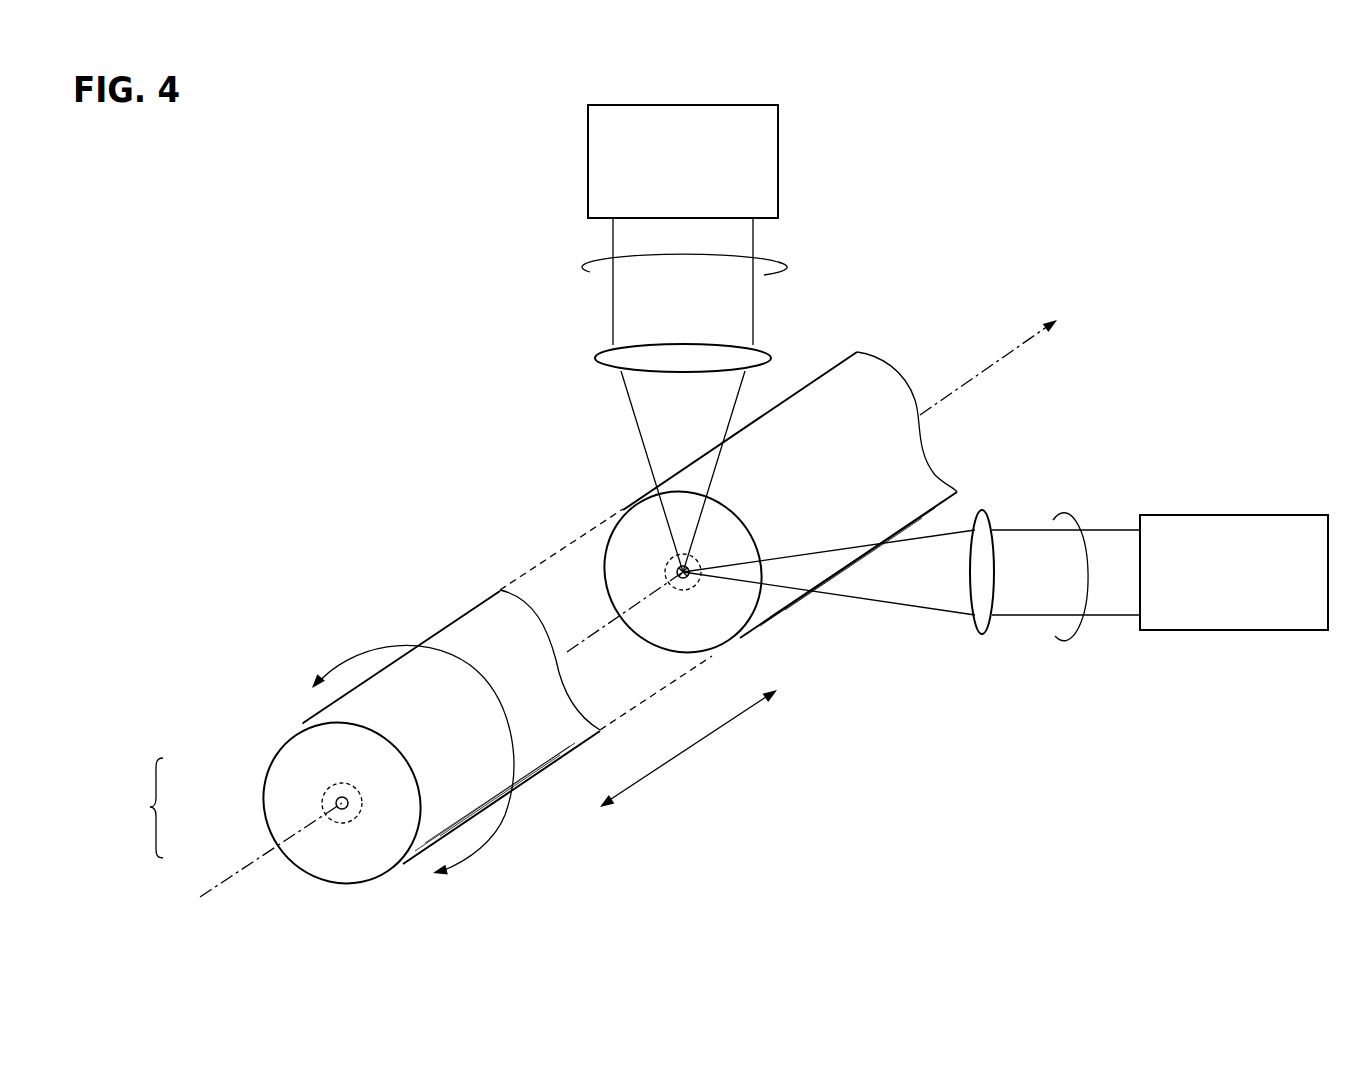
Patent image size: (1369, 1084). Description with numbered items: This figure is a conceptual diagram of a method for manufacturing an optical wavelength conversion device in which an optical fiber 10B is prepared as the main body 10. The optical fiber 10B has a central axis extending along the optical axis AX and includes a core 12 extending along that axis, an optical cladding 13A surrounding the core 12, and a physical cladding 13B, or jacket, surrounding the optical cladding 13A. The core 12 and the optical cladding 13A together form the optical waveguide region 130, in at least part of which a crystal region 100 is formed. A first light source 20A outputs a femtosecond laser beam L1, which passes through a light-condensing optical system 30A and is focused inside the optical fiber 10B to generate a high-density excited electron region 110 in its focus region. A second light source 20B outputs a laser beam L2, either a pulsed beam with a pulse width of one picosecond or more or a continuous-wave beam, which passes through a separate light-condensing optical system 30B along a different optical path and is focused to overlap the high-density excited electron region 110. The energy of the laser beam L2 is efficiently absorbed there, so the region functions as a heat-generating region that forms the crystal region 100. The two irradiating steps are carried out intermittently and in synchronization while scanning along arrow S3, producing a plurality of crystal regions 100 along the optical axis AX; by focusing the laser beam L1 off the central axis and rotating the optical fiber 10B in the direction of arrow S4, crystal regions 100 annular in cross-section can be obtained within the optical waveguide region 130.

The second light source 20B is at (779, 137).
The first light source 20A is at (1237, 515).
The laser beam L2 is at (600, 268).
The laser beam L1 is at (1062, 520).
The light-condensing optical system 30B is at (598, 357).
The light-condensing optical system 30A is at (982, 634).
The optical fiber 10B is at (910, 460).
The main body 10 is at (652, 633).
The optical axis AX is at (642, 595).
The crystal region 100 is at (667, 557).
The high-density excited electron region 110 is at (679, 573).
The arrow S3 is at (687, 752).
The arrow S4 is at (365, 650).
The core 12 is at (338, 801).
The optical cladding 13A is at (338, 806).
The physical cladding 13B is at (330, 862).
The optical waveguide region 130 is at (135, 808).